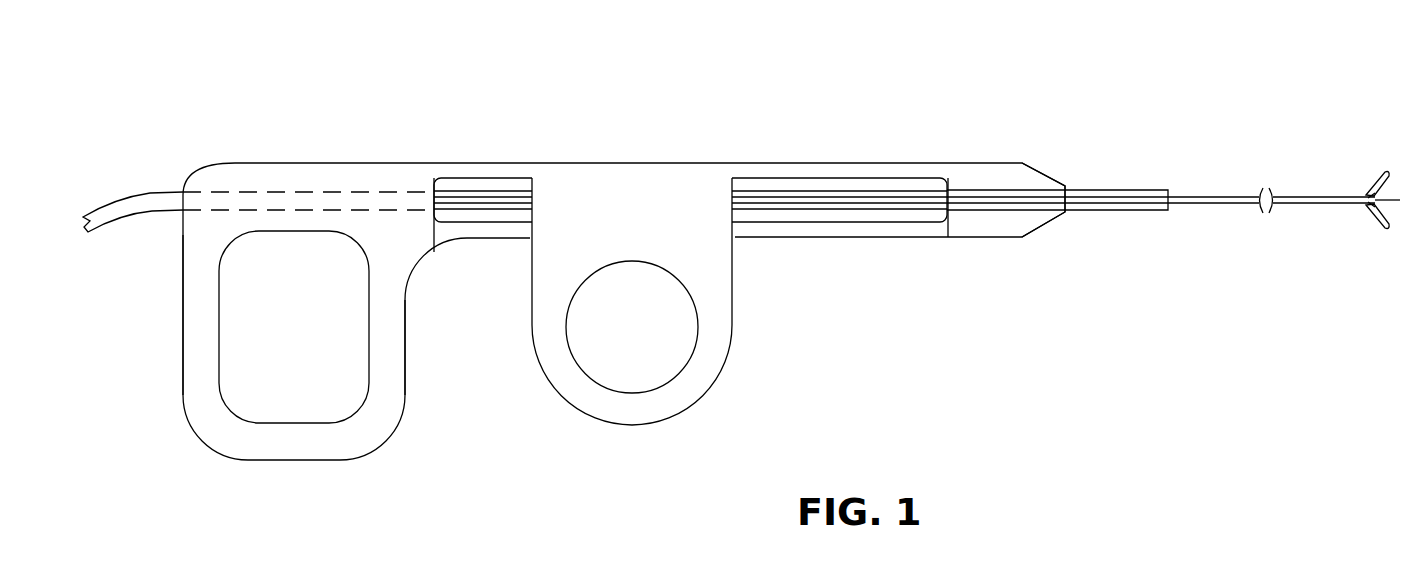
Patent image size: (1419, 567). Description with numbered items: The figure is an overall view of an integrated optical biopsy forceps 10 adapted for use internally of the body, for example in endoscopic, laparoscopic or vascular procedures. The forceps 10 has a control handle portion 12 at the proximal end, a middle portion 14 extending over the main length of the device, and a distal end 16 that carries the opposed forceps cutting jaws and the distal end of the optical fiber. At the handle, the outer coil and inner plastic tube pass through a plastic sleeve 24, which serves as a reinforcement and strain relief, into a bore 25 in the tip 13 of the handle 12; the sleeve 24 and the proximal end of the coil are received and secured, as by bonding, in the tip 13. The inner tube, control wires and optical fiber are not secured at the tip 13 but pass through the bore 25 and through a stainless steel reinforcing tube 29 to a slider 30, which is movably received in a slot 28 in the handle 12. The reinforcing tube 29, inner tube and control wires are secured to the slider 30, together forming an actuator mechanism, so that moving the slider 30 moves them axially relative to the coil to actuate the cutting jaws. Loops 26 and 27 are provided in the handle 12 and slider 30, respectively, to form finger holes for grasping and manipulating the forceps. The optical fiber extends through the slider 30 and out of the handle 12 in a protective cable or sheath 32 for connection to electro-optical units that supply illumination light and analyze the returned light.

The optical biopsy forceps 10 is at (818, 98).
The control handle portion 12 is at (303, 138).
The tip of the handle 13 is at (1040, 173).
The middle portion 14 is at (1228, 172).
The distal end 16 is at (1386, 160).
The plastic sleeve 24 is at (1115, 190).
The bore 25 is at (993, 204).
The loop 26 is at (350, 460).
The loop 27 is at (688, 407).
The slot 28 is at (493, 191).
The stainless steel reinforcing tube 29 is at (868, 190).
The slider 30 is at (620, 227).
The protective cable or sheath 32 is at (113, 206).